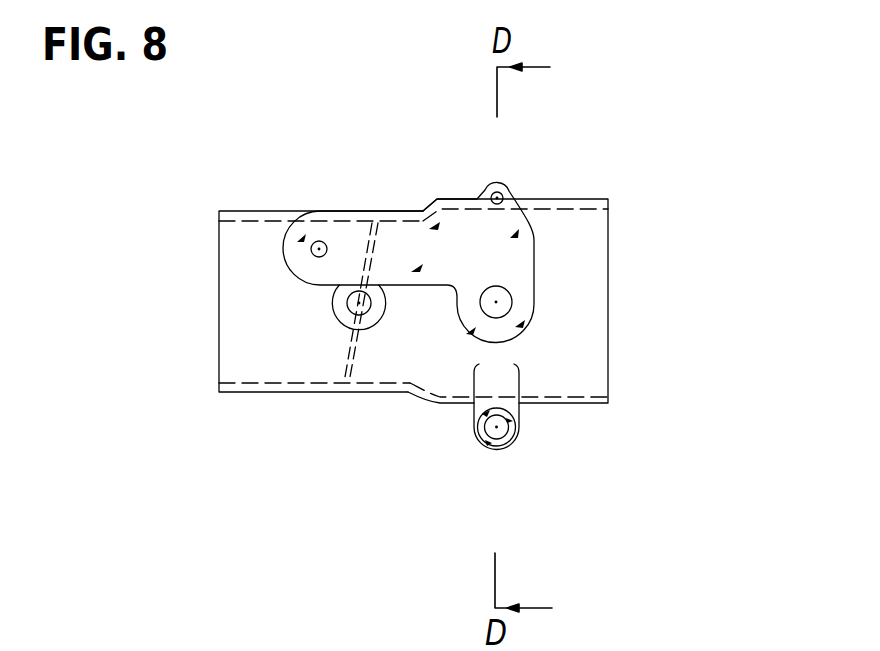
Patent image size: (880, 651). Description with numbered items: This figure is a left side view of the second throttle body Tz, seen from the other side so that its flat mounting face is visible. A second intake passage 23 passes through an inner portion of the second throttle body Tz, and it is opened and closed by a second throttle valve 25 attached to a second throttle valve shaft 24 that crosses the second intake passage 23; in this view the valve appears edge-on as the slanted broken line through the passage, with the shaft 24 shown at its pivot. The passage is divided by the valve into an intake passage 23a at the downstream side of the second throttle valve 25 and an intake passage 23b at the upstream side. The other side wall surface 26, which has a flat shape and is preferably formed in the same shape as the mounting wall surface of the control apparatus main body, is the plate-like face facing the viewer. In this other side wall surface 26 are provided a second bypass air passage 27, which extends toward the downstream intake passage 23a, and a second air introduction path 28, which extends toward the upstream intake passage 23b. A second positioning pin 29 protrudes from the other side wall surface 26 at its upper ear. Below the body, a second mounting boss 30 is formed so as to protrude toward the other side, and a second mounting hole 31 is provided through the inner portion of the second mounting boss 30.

The second throttle body Tz is at (588, 196).
The second intake passage 23 is at (583, 260).
The intake passage at downstream side 23a is at (237, 283).
The intake passage at upstream side 23b is at (508, 301).
The second throttle valve shaft 24 is at (347, 304).
The second throttle valve 25 is at (346, 352).
The other side wall surface 26 is at (406, 229).
The second bypass air passage 27 is at (313, 243).
The second air introduction path 28 is at (524, 320).
The second positioning pin 29 is at (508, 191).
The second mounting boss 30 is at (506, 456).
The second mounting hole 31 is at (477, 437).